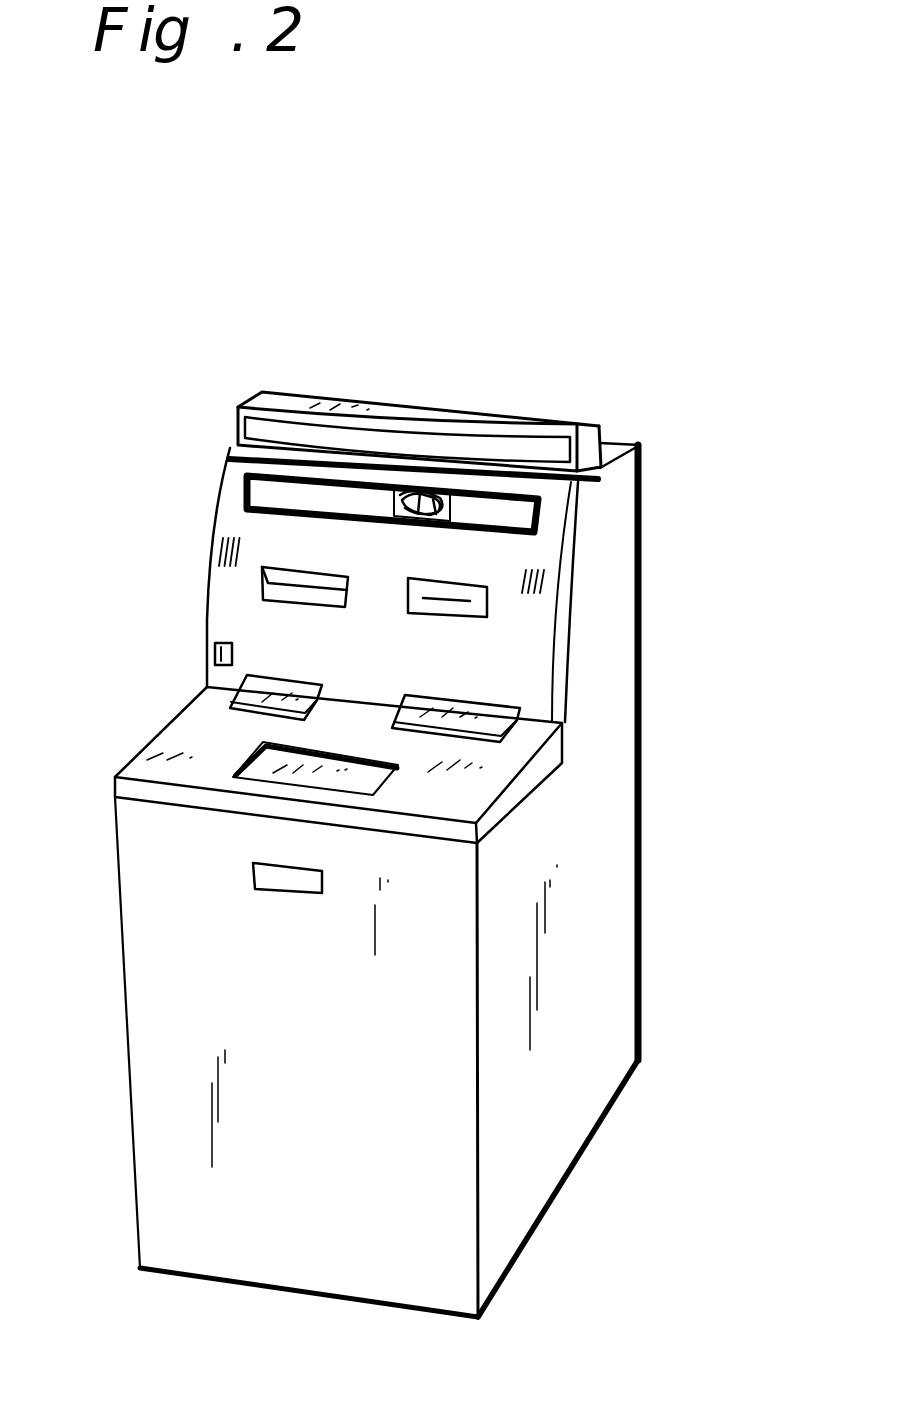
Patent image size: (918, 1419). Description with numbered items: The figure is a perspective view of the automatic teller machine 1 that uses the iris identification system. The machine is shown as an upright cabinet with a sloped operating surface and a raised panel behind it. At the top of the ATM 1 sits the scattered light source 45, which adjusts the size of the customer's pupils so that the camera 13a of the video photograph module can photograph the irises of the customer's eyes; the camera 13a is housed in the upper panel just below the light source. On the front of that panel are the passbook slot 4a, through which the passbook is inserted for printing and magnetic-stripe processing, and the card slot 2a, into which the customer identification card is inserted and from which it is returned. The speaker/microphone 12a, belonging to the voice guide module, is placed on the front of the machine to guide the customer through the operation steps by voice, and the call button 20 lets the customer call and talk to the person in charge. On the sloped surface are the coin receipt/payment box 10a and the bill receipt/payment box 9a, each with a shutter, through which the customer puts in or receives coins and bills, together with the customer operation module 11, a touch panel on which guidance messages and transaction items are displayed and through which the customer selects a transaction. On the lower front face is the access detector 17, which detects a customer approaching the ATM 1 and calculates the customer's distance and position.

The automatic teller machine 1 is at (645, 478).
The scattered light source 45 is at (572, 418).
The camera 13a is at (422, 485).
The passbook slot 4a is at (310, 575).
The speaker/microphone 12a is at (217, 545).
The coin receipt/payment box 10a is at (272, 692).
The call button 20 is at (214, 653).
The card slot 2a is at (483, 604).
The bill receipt/payment box 9a is at (493, 708).
The customer operation module 11 is at (265, 770).
The access detector 17 is at (253, 876).